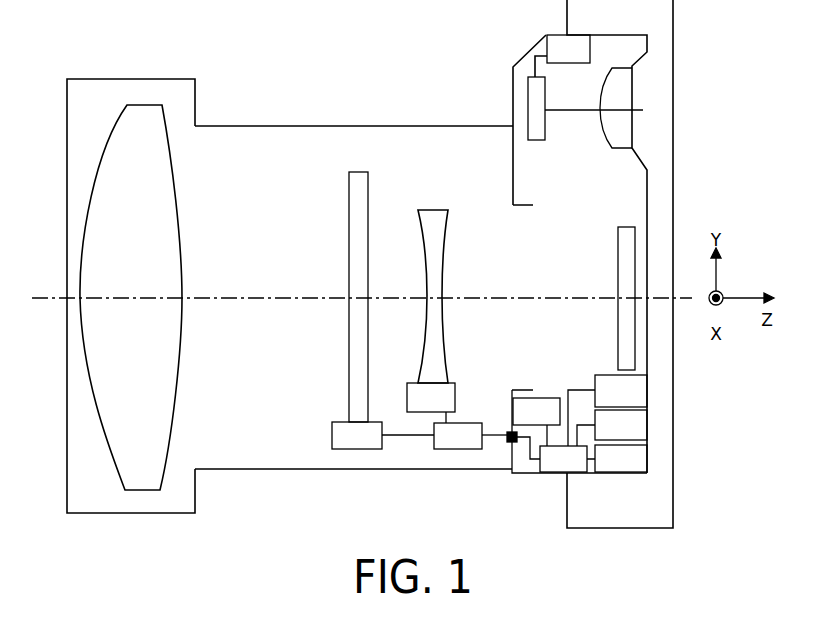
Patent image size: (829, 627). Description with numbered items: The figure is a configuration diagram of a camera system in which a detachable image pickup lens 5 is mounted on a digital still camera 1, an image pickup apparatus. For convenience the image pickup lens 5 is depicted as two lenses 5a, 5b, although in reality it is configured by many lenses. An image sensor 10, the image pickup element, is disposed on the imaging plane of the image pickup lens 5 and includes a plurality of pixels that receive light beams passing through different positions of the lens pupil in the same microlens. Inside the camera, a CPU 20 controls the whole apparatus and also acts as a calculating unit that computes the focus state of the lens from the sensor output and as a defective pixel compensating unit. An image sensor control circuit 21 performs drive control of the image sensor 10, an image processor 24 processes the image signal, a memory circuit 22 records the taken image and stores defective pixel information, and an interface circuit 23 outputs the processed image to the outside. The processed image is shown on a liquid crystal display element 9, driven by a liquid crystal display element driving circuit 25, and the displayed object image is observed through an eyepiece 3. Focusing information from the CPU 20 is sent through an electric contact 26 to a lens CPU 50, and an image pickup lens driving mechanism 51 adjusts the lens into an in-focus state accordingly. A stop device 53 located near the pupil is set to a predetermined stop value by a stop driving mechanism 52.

The digital still camera 1 is at (529, 51).
The eyepiece 3 is at (613, 148).
The image pickup lens 5 is at (83, 68).
The lens 5a is at (180, 183).
The lens 5b is at (433, 210).
The liquid crystal display element 9 is at (528, 90).
The image sensor 10 is at (618, 260).
The CPU 20 is at (540, 473).
The image sensor control circuit 21 is at (647, 390).
The memory circuit 22 is at (647, 425).
The interface circuit 23 is at (647, 457).
The image processor 24 is at (550, 398).
The liquid crystal display element driving circuit 25 is at (548, 33).
The electric contact 26 is at (512, 445).
The lens CPU 50 is at (470, 423).
The image pickup lens driving mechanism 51 is at (407, 398).
The stop driving mechanism 52 is at (332, 437).
The stop device 53 is at (349, 353).